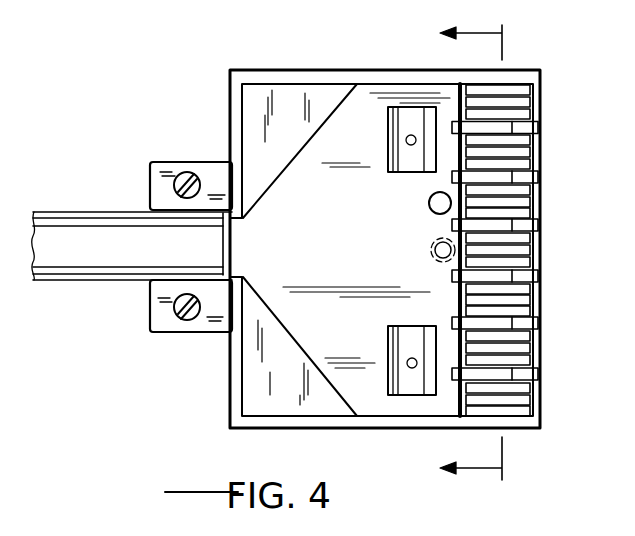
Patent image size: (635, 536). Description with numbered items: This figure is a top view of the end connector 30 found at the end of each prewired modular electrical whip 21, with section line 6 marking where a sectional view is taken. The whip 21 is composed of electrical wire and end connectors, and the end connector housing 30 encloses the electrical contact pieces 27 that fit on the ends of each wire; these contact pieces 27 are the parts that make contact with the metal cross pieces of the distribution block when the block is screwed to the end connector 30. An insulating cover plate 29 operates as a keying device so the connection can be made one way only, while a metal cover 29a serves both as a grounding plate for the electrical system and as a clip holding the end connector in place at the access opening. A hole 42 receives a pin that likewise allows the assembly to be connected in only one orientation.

The modular electrical whip 21 is at (88, 212).
The electrical contact piece 27 is at (539, 343).
The insulating cover plate 29 is at (272, 390).
The metal cover 29a is at (366, 395).
The end connector housing 30 is at (230, 385).
The hole 42 is at (428, 203).
The section line 6- 6 is at (468, 263).